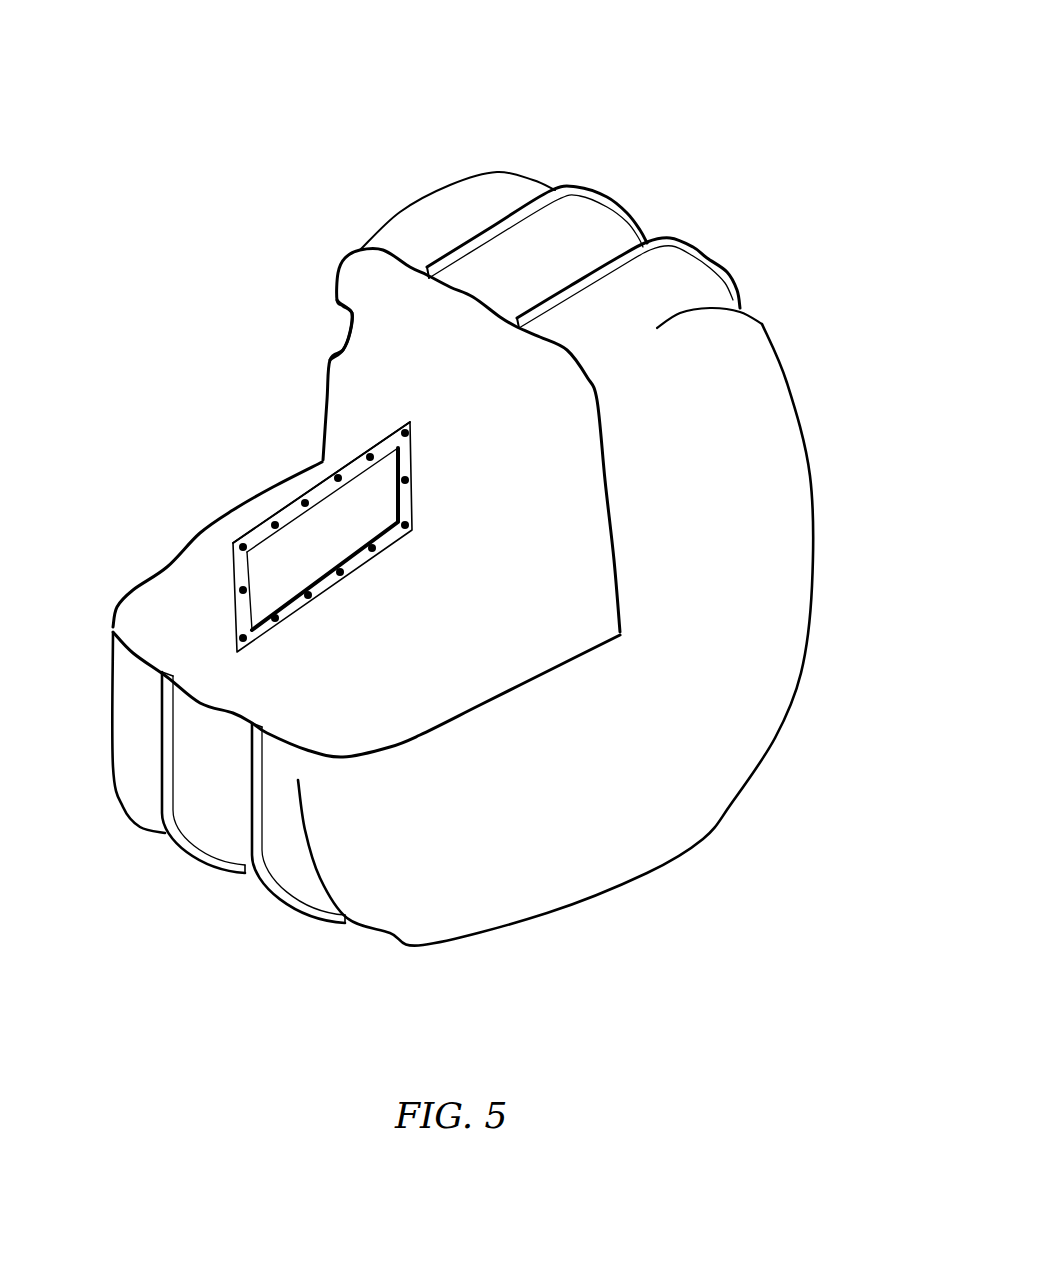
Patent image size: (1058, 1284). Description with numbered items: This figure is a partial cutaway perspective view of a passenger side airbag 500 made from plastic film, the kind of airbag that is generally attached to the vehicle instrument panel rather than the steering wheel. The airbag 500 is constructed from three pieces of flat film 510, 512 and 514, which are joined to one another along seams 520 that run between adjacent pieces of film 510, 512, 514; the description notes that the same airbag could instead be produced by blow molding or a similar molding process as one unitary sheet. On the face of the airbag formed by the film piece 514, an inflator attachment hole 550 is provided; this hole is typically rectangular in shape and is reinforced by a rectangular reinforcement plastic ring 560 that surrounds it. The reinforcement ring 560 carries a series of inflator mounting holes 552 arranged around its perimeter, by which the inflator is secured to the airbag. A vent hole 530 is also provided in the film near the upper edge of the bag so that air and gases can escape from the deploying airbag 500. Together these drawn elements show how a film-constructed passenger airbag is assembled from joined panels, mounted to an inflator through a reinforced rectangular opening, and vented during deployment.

The passenger side airbag 500 is at (738, 819).
The flat film piece 510 is at (727, 396).
The flat film piece 512 is at (553, 245).
The flat film piece 514 is at (178, 622).
The joined seams 520 is at (620, 200).
The vent hole 530 is at (337, 317).
The inflator attachment hole 550 is at (345, 503).
The inflator mounting holes 552 is at (372, 443).
The rectangular reinforcement plastic ring 560 is at (407, 505).